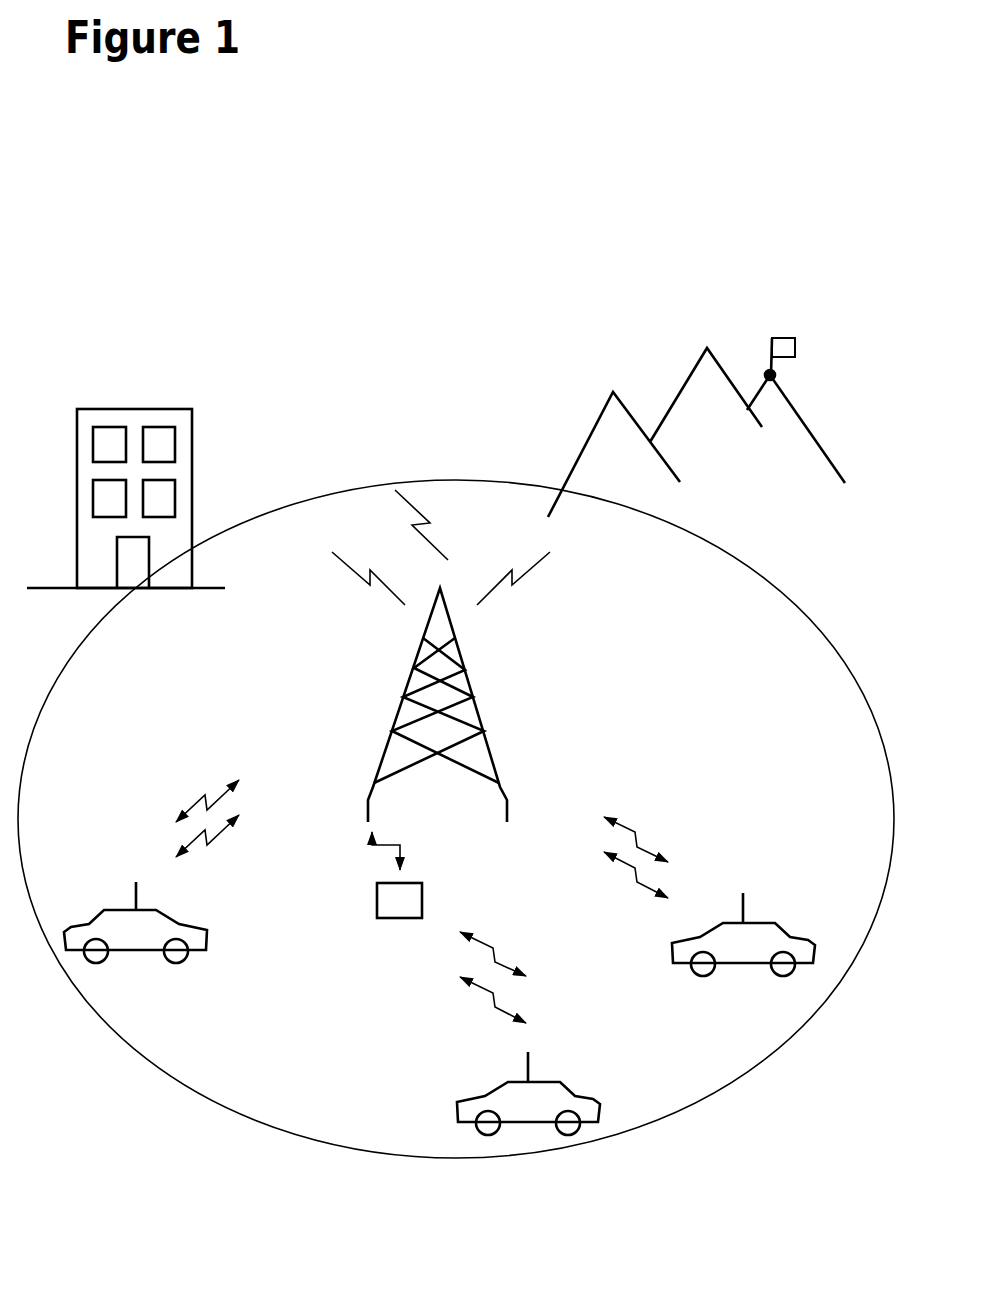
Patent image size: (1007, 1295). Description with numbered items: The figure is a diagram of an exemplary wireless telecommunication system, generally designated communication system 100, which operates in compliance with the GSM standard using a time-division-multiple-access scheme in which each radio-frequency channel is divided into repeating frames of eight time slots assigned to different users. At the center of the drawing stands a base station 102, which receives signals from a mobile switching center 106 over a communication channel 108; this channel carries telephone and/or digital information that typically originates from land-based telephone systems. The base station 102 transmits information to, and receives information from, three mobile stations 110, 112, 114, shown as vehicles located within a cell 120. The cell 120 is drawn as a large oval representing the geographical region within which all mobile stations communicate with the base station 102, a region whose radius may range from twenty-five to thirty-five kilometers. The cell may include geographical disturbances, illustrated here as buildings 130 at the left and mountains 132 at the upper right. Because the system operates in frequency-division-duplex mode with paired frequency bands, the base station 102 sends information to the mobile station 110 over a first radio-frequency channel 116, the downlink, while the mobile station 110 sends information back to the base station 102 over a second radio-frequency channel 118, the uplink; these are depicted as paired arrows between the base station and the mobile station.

The communication system 100 is at (786, 182).
The base station 102 is at (483, 740).
The mobile switching center 106 is at (403, 919).
The communication channel 108 is at (400, 851).
The mobile station 110 is at (68, 930).
The mobile station 112 is at (602, 1100).
The mobile station 114 is at (810, 940).
The first radio-frequency channel 116 is at (205, 796).
The second radio-frequency channel 118 is at (213, 845).
The cell 120 is at (742, 1082).
The buildings 130 is at (190, 452).
The mountains 132 is at (700, 382).